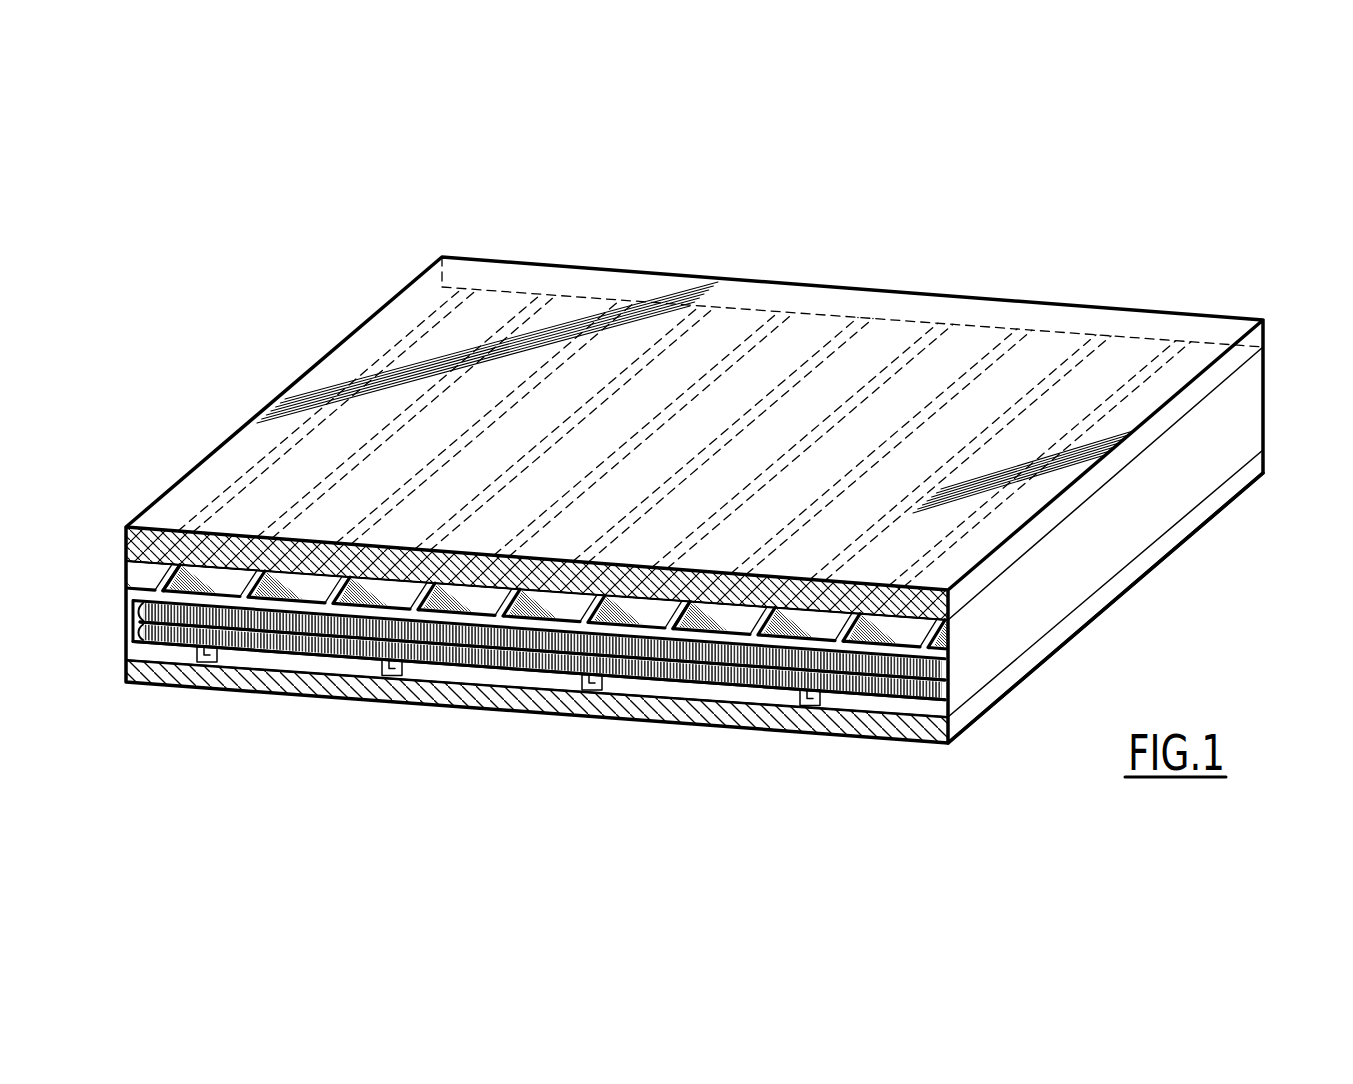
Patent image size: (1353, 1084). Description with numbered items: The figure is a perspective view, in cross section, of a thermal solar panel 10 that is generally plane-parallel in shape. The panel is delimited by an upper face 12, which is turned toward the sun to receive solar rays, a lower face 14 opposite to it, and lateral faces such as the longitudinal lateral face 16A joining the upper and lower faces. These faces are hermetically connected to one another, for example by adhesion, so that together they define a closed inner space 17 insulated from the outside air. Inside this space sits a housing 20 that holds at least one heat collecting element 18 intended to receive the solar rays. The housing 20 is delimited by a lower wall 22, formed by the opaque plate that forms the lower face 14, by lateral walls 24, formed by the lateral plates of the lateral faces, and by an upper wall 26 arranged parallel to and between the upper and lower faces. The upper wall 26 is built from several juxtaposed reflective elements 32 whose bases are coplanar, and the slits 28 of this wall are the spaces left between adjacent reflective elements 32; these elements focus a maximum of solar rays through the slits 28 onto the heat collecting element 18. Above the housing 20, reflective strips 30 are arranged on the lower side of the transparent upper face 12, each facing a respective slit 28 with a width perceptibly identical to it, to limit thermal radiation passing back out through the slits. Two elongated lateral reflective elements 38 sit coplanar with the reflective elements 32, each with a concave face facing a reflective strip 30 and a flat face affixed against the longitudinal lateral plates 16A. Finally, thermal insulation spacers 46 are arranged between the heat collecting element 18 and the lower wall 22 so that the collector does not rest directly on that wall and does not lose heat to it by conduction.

The solar panel 10 is at (1226, 268).
The upper face 12 is at (790, 330).
The lower face 14 is at (993, 706).
The longitudinal lateral face 16A is at (1258, 390).
The inner space 17 is at (884, 705).
The heat collecting element 18 is at (668, 687).
The housing 20 is at (150, 666).
The lower wall 22 is at (479, 676).
The lateral walls 24 is at (140, 614).
The upper wall 26 is at (385, 612).
The slits 28 is at (510, 584).
The reflective strips 30 is at (590, 565).
The reflective elements 32 is at (720, 610).
The lateral reflective elements 38 is at (148, 548).
The thermal insulation spacers 46 is at (198, 661).